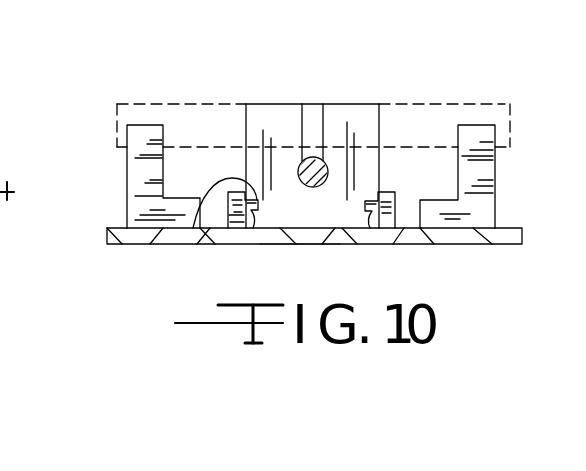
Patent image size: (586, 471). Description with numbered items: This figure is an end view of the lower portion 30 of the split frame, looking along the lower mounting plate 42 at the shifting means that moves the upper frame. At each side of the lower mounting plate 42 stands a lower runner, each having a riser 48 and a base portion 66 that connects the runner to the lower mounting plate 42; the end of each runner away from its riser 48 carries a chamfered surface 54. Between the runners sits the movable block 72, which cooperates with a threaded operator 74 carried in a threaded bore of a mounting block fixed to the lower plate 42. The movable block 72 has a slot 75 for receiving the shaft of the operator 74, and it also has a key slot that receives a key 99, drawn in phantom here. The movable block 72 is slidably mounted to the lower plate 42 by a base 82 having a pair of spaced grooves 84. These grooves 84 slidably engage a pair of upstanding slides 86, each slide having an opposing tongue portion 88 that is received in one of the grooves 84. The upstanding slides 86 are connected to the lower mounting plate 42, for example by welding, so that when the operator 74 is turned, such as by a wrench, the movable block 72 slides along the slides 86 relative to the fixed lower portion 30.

The lower portion 30 is at (185, 93).
The lower mounting plate 42 is at (523, 237).
The riser 48 is at (128, 127).
The chamfered surface 54 is at (137, 180).
The base portion 66 is at (137, 212).
The movable block 72 is at (330, 221).
The threaded operator 74 is at (298, 172).
The slot 75 is at (308, 112).
The key 99 is at (497, 104).
The tongue portion 88 is at (203, 195).
The upstanding slides 86 is at (226, 228).
The grooves 84 is at (254, 229).
The base 82 is at (333, 244).